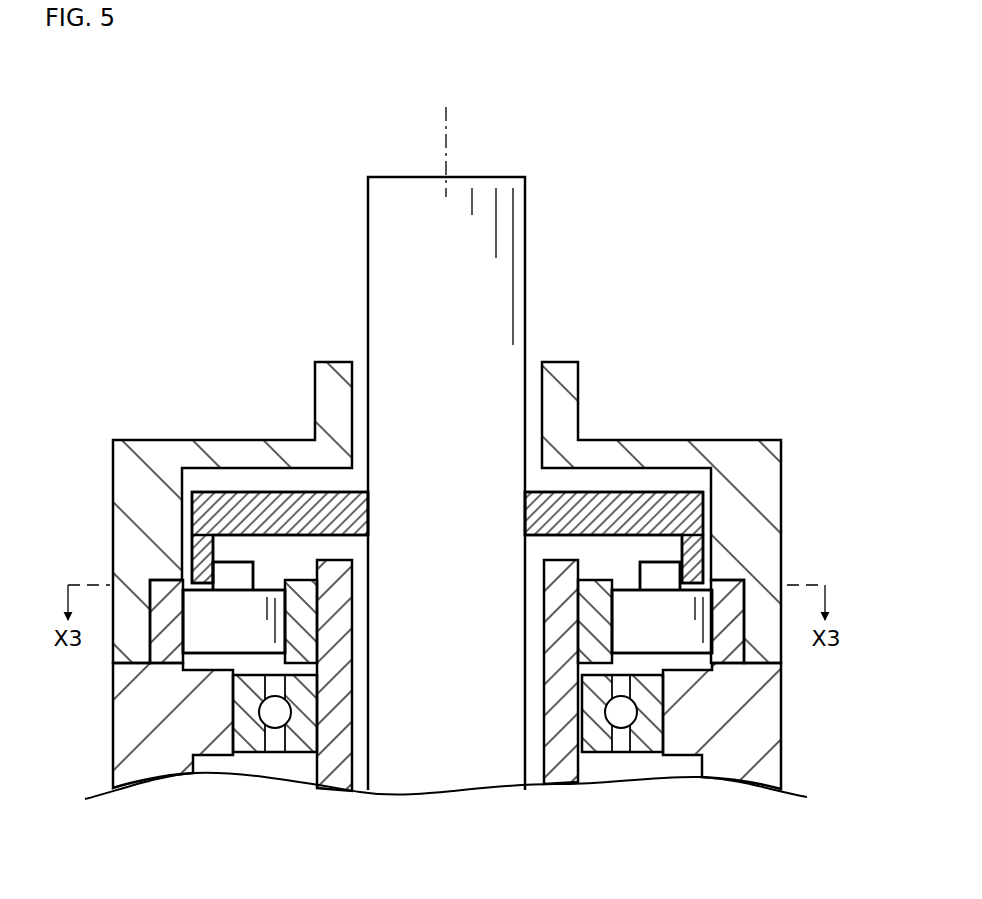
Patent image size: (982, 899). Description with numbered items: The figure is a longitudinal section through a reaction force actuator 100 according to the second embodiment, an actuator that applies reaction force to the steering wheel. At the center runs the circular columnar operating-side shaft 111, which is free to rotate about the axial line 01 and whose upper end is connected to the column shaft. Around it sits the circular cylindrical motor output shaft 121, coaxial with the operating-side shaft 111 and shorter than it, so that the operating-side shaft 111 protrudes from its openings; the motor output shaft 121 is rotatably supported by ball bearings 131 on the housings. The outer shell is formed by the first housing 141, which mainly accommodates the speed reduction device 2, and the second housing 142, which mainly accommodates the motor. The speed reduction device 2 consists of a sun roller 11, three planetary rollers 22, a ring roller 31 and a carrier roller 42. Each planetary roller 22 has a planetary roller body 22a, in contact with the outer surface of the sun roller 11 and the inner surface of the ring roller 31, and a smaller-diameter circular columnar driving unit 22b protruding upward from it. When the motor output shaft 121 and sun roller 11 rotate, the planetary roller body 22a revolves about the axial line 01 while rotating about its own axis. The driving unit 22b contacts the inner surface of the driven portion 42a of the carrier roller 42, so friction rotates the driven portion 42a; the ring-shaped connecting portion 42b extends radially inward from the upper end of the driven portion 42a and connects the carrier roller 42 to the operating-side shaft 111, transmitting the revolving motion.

The axial line 01 is at (443, 138).
The reaction force actuator 100 is at (653, 165).
The speed reduction device 2 is at (172, 297).
The operating-side shaft 111 is at (405, 281).
The first housing 141 is at (107, 525).
The second housing 142 is at (104, 759).
The planetary roller 22 is at (268, 400).
The planetary roller body 22a is at (273, 598).
The driving unit 22b is at (235, 578).
The carrier roller 42 is at (714, 511).
The driven portion 42a is at (695, 549).
The connecting portion 42b is at (588, 513).
The ring roller 31 is at (727, 617).
The sun roller 11 is at (603, 630).
The motor output shaft 121 is at (570, 765).
The bearing 131 is at (640, 752).